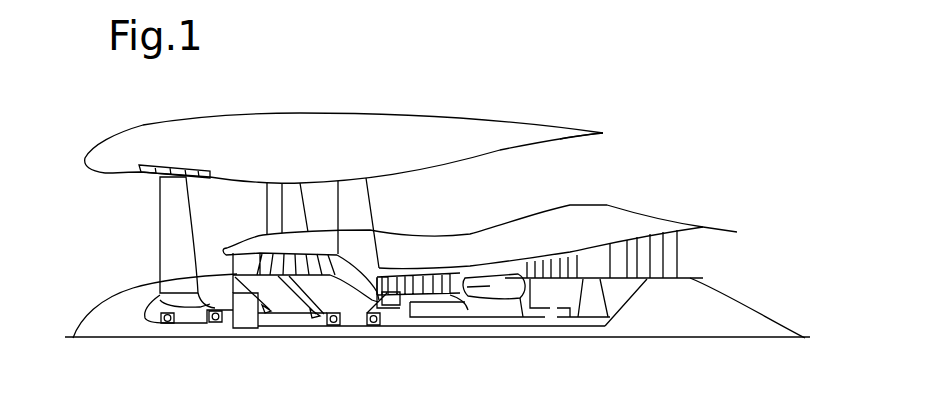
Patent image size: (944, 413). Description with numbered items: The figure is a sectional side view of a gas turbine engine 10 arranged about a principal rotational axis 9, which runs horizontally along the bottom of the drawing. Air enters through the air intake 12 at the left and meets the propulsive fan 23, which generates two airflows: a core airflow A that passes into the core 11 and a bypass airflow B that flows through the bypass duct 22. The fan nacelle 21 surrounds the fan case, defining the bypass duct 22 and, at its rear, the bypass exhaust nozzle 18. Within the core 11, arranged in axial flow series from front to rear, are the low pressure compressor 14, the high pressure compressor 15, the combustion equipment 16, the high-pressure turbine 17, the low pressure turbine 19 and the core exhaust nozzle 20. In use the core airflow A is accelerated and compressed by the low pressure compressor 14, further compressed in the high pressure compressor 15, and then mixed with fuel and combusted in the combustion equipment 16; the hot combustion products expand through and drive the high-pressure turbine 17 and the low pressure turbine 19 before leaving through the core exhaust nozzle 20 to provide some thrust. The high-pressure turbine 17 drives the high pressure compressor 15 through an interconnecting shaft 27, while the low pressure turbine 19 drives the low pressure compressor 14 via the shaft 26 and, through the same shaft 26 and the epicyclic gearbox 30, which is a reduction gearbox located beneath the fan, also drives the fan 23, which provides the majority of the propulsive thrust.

The principal rotational axis 9 is at (650, 338).
The gas turbine engine 10 is at (138, 124).
The core 11 is at (474, 253).
The air intake 12 is at (97, 203).
The low pressure compressor 14 is at (300, 183).
The high pressure compressor 15 is at (425, 270).
The combustion equipment 16 is at (497, 287).
The high-pressure turbine 17 is at (543, 272).
The bypass exhaust nozzle 18 is at (652, 168).
The low pressure turbine 19 is at (658, 245).
The core exhaust nozzle 20 is at (715, 268).
The fan nacelle 21 is at (360, 127).
The bypass duct 22 is at (582, 180).
The propulsive fan 23 is at (163, 238).
The shaft 26 is at (418, 327).
The interconnecting shaft 27 is at (458, 318).
The epicyclic gearbox 30 is at (245, 316).
The core airflow A is at (227, 266).
The bypass airflow B is at (233, 212).